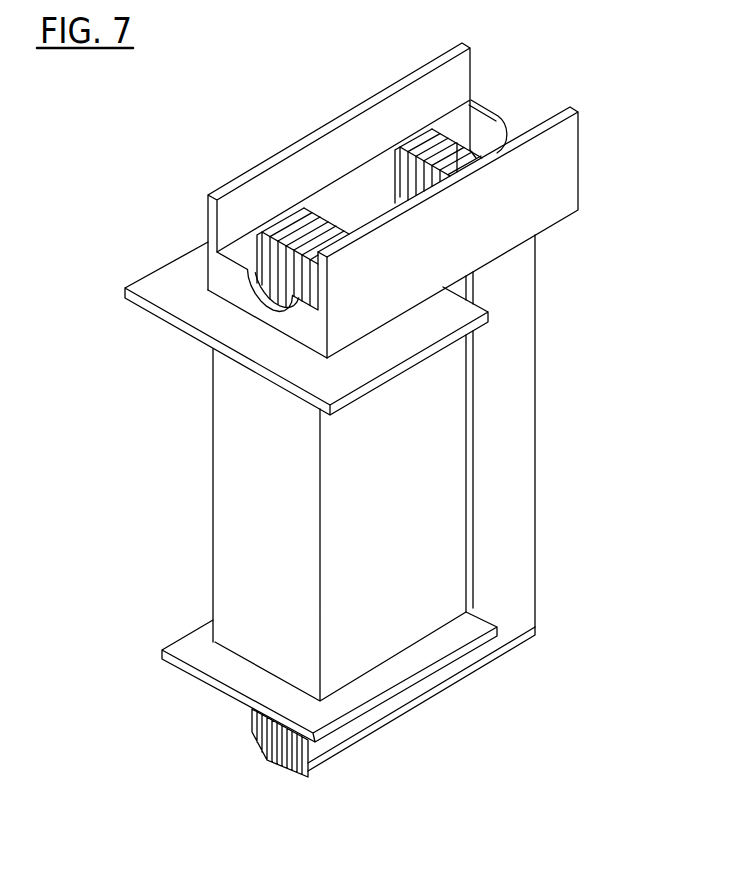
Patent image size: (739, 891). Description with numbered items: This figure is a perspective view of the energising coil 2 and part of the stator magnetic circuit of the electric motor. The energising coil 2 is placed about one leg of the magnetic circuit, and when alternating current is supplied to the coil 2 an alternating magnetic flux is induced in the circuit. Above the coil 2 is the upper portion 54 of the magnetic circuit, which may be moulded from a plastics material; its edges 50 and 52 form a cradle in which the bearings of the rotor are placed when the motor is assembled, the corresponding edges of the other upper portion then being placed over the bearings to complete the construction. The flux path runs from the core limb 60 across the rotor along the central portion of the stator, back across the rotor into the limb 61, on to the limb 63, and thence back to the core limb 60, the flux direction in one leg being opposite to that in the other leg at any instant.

The energising coil 2 is at (235, 547).
The edge 50 is at (248, 288).
The edge 52 is at (505, 120).
The upper portion 54 is at (568, 163).
The core limb 60 is at (255, 237).
The limb 61 is at (475, 97).
The limb 63 is at (425, 705).